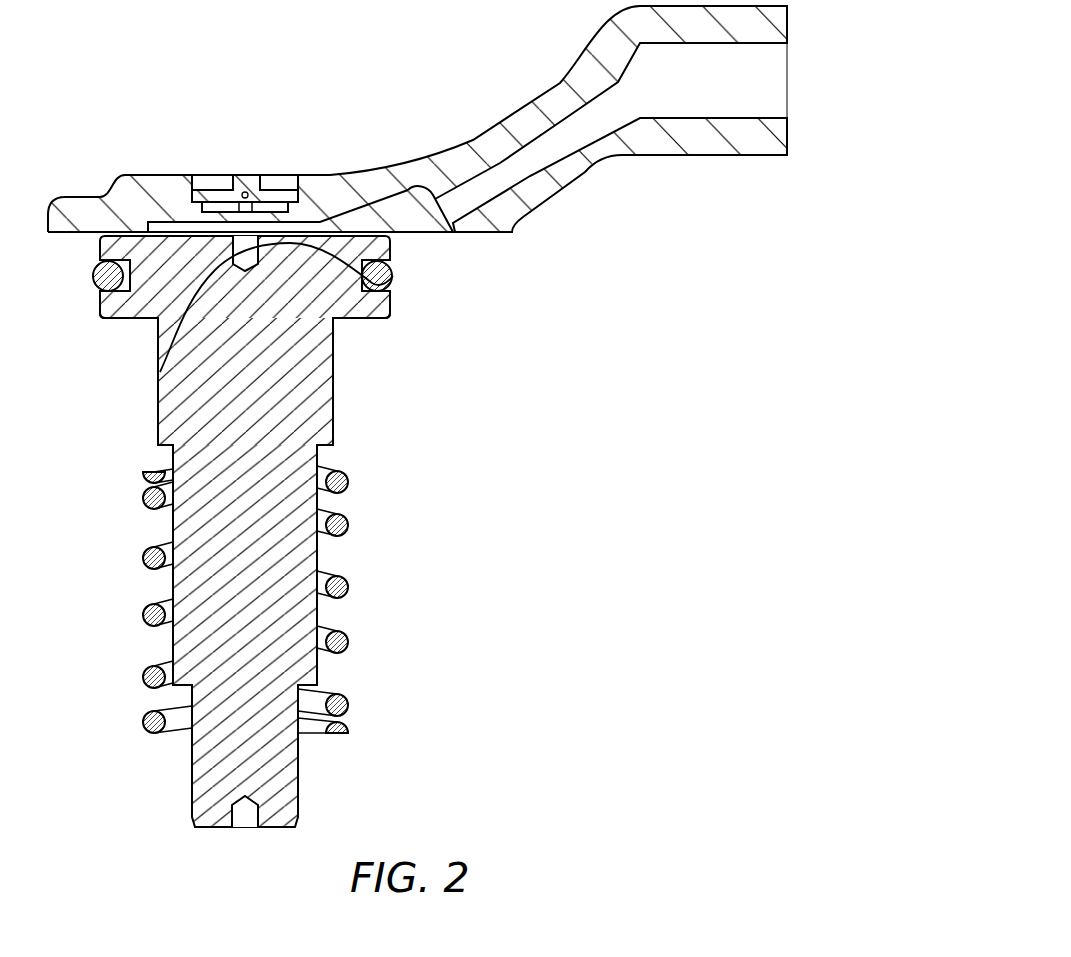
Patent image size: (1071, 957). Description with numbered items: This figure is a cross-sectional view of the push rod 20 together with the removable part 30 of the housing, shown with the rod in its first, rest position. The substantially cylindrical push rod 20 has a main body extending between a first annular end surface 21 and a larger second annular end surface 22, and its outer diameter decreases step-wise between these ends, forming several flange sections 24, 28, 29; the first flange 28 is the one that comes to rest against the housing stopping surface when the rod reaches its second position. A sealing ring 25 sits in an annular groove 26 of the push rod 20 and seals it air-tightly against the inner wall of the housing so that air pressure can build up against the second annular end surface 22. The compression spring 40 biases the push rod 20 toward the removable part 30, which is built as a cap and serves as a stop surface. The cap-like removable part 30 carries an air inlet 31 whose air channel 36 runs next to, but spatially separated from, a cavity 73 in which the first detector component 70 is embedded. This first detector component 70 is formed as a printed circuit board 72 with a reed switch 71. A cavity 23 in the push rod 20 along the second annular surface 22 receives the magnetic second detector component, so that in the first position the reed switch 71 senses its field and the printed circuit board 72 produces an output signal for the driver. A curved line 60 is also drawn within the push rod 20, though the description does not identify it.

The push rod 20 is at (246, 556).
The first annular end surface 21 is at (216, 829).
The second annular end surface 22 is at (150, 222).
The cavity 23 is at (393, 276).
The flange section 24 is at (160, 452).
The sealing ring 25 is at (93, 272).
The annular groove 26 is at (143, 300).
The first flange 28 is at (183, 688).
The flange section 29 is at (373, 321).
The removable part 30 is at (553, 119).
The air inlet 31 is at (521, 121).
The air channel 36 is at (560, 143).
The compression spring 40 is at (255, 599).
The sealing surface 60 is at (160, 372).
The first detector component 70 is at (261, 156).
The reed switch 71 is at (212, 197).
The printed circuit board 72 is at (281, 207).
The cavity 73 is at (272, 183).